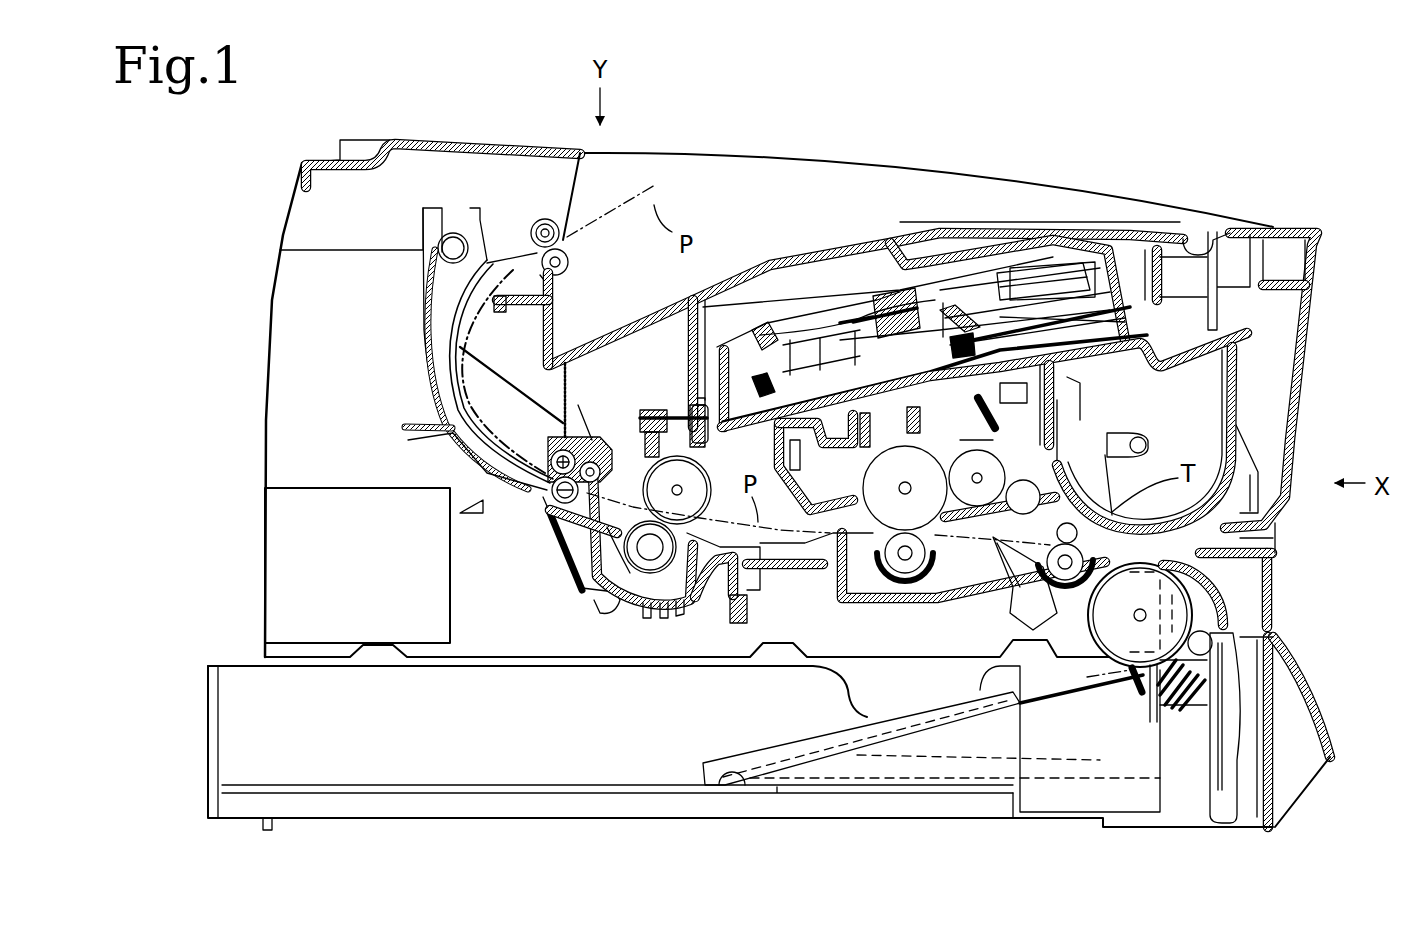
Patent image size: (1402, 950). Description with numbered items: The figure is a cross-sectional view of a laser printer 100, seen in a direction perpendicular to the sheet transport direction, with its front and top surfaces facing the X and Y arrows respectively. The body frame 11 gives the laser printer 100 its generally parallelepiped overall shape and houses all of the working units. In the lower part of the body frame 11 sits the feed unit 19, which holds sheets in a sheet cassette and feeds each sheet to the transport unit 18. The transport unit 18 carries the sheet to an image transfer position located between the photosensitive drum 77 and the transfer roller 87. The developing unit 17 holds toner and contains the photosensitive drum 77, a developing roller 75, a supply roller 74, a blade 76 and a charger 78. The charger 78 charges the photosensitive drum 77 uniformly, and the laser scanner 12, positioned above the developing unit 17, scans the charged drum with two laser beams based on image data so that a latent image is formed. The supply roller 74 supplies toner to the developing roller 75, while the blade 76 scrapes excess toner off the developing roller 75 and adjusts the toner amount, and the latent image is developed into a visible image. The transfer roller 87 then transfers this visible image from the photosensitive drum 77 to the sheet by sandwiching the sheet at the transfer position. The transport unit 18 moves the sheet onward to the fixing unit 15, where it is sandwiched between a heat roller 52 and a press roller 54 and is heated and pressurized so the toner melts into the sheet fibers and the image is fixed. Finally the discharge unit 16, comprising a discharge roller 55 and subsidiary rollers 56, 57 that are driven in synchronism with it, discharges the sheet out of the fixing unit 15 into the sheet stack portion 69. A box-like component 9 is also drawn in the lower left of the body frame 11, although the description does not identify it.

The power supply / control box 9 is at (295, 562).
The body frame 11 is at (527, 142).
The laser scanner 12 is at (866, 278).
The fixing unit 15 is at (546, 590).
The discharge unit 16 is at (404, 352).
The developing unit 17 is at (1240, 372).
The transport unit 18 is at (946, 602).
The feed unit 19 is at (962, 830).
The heat roller 52 is at (655, 410).
The press roller 54 is at (683, 607).
The discharge roller 55 is at (553, 488).
The subsidiary roller 56 is at (588, 418).
The subsidiary roller 57 is at (545, 457).
The sheet stack portion 69 is at (792, 257).
The supply roller 74 is at (1035, 497).
The developing roller 75 is at (1000, 487).
The blade 76 is at (996, 426).
The photosensitive drum 77 is at (862, 486).
The charger 78 is at (889, 440).
The transfer roller 87 is at (893, 604).
The laser printer 100 is at (1233, 190).